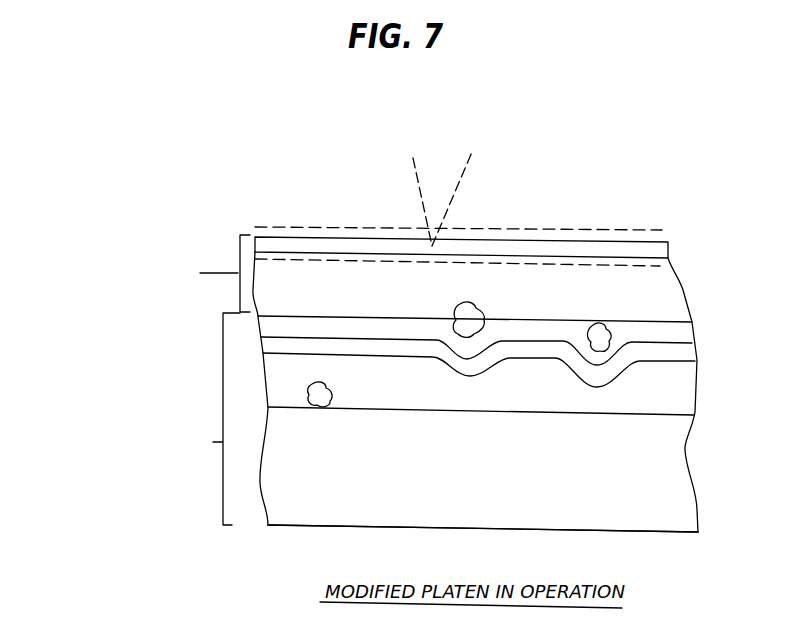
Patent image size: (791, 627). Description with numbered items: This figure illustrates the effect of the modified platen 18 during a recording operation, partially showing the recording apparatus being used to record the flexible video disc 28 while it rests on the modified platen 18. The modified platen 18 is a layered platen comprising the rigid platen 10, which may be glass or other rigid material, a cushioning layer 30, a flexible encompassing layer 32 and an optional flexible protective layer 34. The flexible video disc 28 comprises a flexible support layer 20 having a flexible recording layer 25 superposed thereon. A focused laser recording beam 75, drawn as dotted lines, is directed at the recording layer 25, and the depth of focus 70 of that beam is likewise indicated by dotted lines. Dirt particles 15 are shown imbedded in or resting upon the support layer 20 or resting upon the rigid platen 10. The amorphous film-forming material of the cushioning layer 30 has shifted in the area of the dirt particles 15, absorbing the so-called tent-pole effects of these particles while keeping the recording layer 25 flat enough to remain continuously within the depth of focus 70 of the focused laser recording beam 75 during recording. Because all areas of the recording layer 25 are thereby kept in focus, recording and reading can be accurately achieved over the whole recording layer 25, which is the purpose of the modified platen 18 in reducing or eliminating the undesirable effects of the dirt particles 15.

The rigid platen 10 is at (675, 462).
The dirt particles 15 is at (597, 328).
The modified platen 18 is at (380, 392).
The flexible support layer 20 is at (670, 298).
The flexible recording layer 25 is at (673, 252).
The flexible video disc 28 is at (390, 252).
The cushioning layer 30 is at (683, 393).
The flexible encompassing layer 32 is at (683, 354).
The flexible protective layer 34 is at (683, 334).
The depth of focus 70 is at (280, 258).
The focused laser recording beam 75 is at (427, 200).